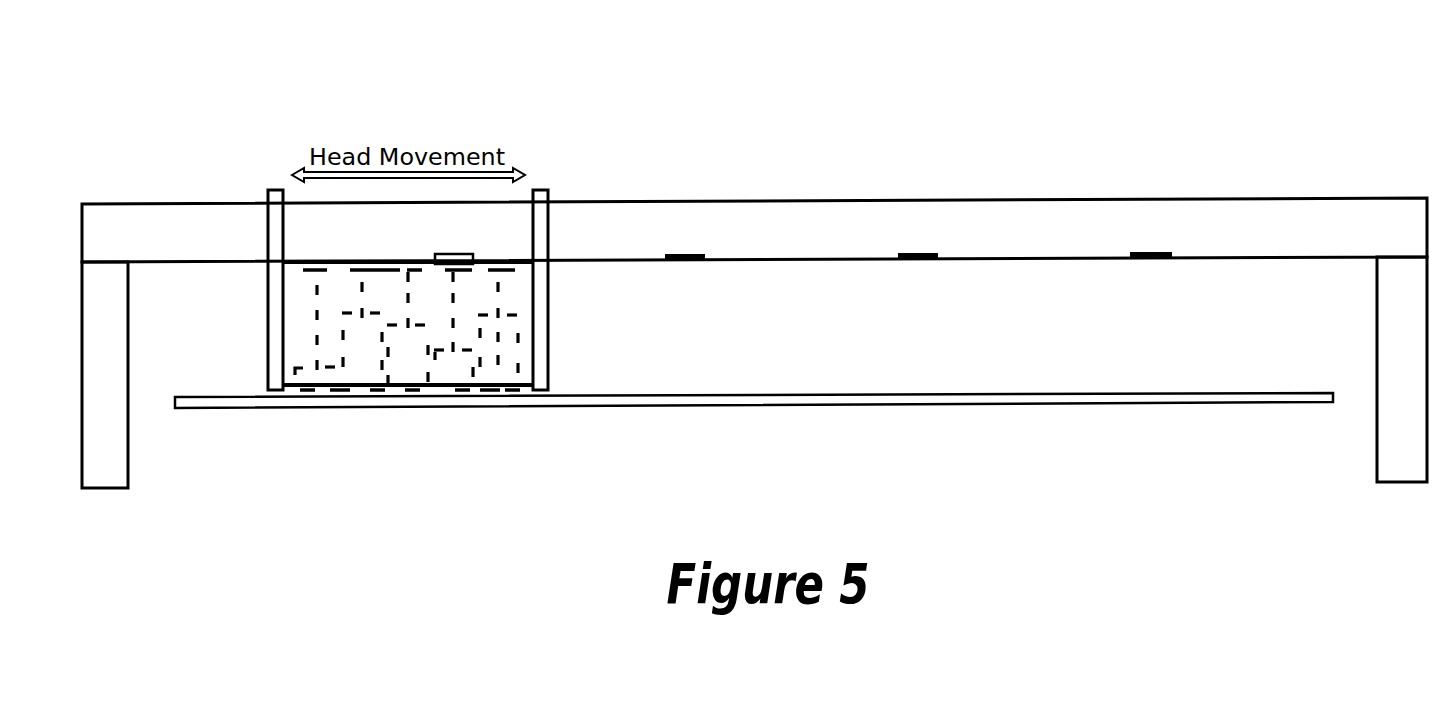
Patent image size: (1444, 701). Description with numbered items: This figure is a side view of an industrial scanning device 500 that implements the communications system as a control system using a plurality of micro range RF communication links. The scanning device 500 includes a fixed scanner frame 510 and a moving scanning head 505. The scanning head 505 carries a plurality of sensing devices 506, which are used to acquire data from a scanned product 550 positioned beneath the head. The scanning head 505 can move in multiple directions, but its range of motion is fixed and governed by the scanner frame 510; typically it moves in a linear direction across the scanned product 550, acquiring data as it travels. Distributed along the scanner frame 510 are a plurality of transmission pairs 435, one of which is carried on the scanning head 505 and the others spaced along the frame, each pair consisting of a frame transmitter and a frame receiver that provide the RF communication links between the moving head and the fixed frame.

The industrial scanning device 500 is at (193, 108).
The scanner frame 510 is at (1057, 199).
The scanning head 505 is at (549, 332).
The sensing devices 506 is at (315, 393).
The transmission pairs 435 is at (441, 253).
The scanned product 550 is at (1240, 404).